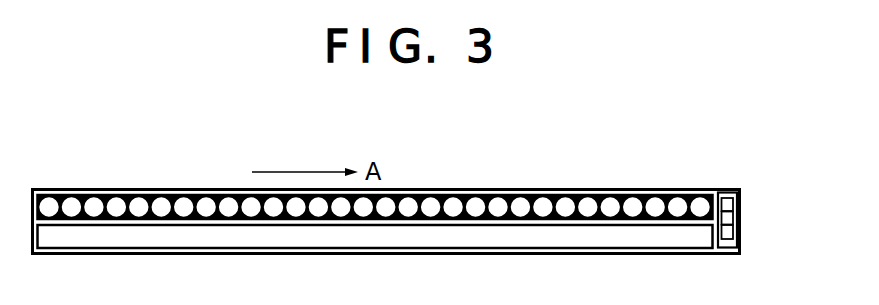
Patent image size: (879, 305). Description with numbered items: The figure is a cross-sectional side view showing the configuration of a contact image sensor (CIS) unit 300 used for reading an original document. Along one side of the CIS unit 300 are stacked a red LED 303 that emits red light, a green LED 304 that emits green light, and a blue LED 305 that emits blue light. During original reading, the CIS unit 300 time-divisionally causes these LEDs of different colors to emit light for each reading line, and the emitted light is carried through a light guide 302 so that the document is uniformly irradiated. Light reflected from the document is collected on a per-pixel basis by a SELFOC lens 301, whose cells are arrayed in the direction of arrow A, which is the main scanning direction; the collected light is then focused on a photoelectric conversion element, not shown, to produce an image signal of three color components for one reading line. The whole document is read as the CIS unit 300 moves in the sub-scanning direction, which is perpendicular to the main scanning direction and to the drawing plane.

The contact image sensor (CIS) unit 300 is at (427, 132).
The SELFOC lens 301 is at (101, 195).
The light guide 302 is at (243, 242).
The red LED 303 is at (732, 206).
The green LED 304 is at (733, 220).
The blue LED 305 is at (733, 234).